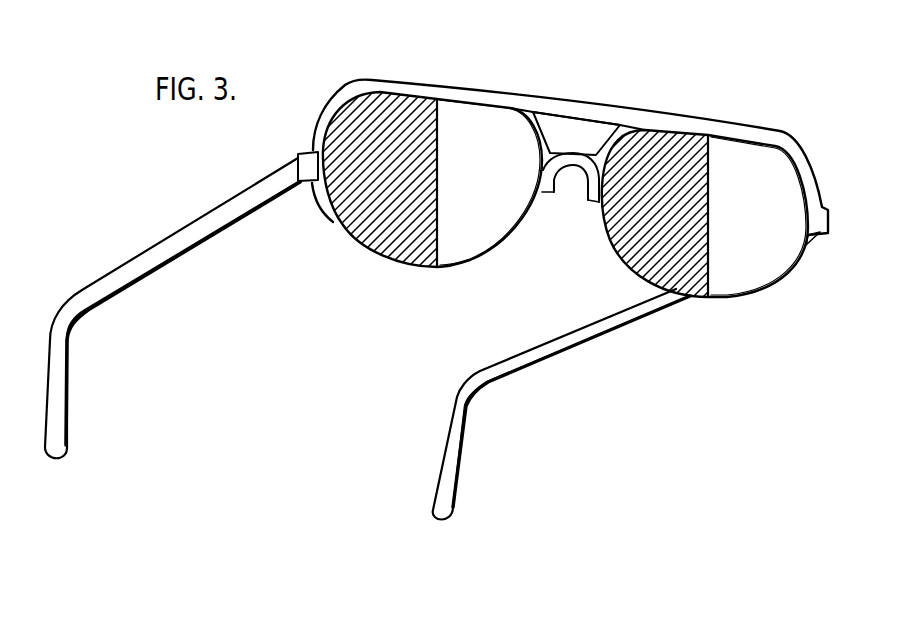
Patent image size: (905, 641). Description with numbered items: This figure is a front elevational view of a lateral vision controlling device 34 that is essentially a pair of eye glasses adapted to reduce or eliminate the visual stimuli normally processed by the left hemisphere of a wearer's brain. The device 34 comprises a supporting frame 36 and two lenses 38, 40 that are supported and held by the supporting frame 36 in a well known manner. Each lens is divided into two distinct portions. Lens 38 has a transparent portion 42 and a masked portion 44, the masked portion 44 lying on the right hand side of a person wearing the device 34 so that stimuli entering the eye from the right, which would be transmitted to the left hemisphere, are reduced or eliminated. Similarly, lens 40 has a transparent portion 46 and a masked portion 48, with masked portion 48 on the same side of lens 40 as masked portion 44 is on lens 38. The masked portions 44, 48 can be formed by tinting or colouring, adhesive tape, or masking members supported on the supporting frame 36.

The lateral vision controlling device 34 is at (436, 265).
The supporting frame 36 is at (597, 88).
The lens 38 is at (375, 204).
The lens 40 is at (650, 239).
The transparent portion 42 is at (477, 232).
The masked portion 44 is at (345, 226).
The transparent portion 46 is at (770, 262).
The masked portion 48 is at (628, 235).